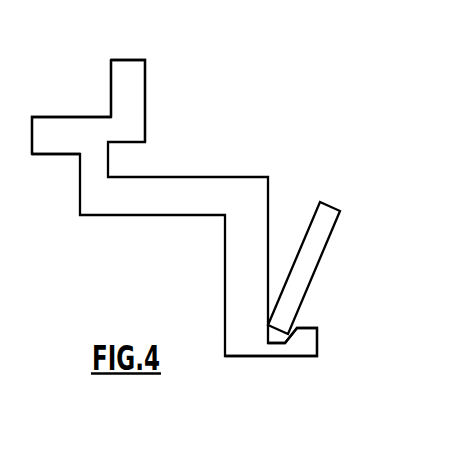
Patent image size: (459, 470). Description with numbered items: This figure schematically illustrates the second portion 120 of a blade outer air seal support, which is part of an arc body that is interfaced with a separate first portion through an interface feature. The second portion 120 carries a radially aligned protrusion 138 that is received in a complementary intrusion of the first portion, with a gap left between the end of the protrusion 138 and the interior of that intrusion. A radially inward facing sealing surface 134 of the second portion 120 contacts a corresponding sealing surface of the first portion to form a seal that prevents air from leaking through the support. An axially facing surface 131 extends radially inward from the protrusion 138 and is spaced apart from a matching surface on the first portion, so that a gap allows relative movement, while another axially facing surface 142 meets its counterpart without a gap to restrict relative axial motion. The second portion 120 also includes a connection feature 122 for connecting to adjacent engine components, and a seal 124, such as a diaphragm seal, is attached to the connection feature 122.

The second portion 120 is at (264, 63).
The connection feature 122 is at (302, 347).
The seal 124 is at (327, 217).
The axially facing surface 131 is at (80, 198).
The radially inward facing sealing surface 134 is at (50, 156).
The radially aligned protrusion 138 is at (60, 129).
The axially facing surface 142 is at (112, 75).